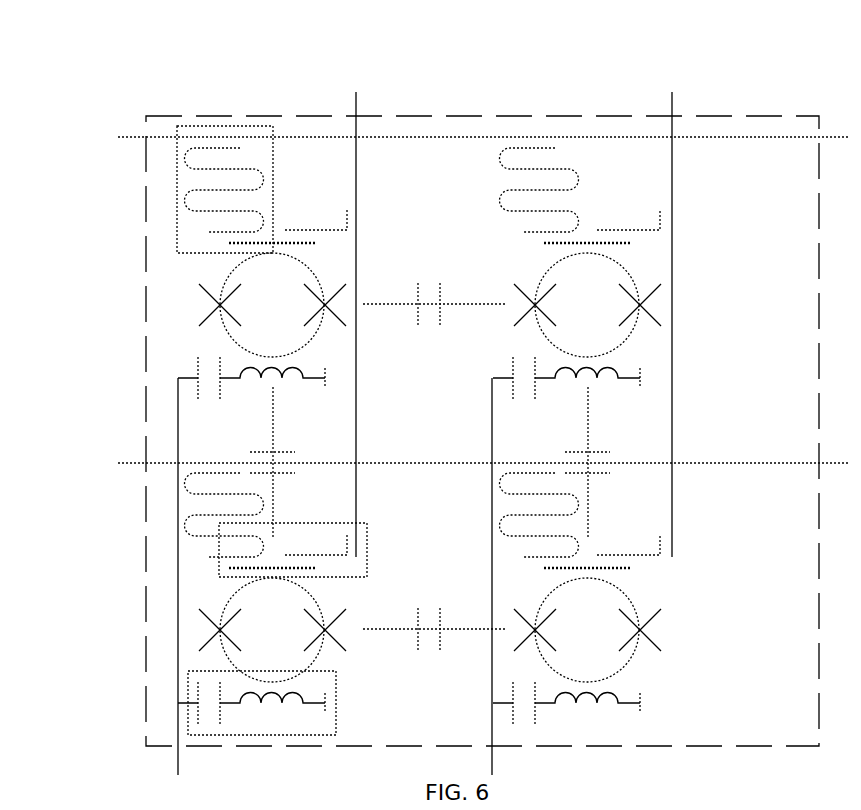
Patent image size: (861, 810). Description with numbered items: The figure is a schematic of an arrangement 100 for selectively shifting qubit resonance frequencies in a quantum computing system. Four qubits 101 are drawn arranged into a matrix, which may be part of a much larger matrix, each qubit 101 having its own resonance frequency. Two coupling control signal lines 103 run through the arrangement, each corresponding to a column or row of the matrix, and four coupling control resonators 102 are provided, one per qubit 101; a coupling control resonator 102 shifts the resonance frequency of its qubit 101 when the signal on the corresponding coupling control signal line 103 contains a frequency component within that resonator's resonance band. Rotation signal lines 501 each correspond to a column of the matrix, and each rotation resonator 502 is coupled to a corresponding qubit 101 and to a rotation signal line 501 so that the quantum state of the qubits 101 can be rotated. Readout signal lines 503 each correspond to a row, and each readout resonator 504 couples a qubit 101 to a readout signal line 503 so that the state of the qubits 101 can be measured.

The arrangement 100 is at (107, 90).
The qubit 101 is at (235, 330).
The coupling control resonator 102 is at (325, 370).
The coupling control signal line 103 is at (180, 565).
The rotation signal line 501 is at (356, 190).
The rotation resonator 502 is at (356, 235).
The readout signal line 503 is at (779, 137).
The readout resonator 504 is at (182, 187).